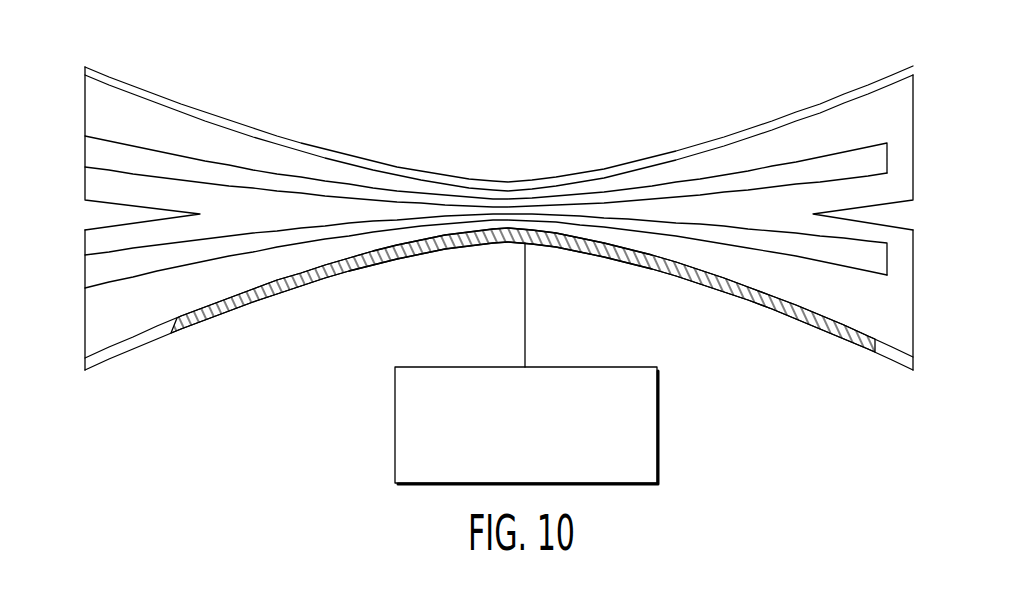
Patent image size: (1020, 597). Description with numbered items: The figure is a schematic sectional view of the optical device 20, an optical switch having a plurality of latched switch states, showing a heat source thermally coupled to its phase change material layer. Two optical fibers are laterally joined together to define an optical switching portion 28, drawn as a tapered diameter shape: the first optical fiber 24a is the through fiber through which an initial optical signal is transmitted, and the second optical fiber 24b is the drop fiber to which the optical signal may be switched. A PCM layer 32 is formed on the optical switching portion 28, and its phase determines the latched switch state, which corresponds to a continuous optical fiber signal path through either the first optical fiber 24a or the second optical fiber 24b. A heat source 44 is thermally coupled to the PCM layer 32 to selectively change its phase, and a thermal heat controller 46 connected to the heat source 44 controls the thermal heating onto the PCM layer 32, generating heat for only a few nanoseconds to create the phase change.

The optical device 20 is at (468, 70).
The first optical fiber 24a is at (85, 103).
The second optical fiber 24b is at (85, 321).
The optical switching portion 28 is at (519, 141).
The phase change material (PCM) layer 32 is at (125, 356).
The heat source 44 is at (302, 292).
The thermal heat controller 46 is at (657, 418).